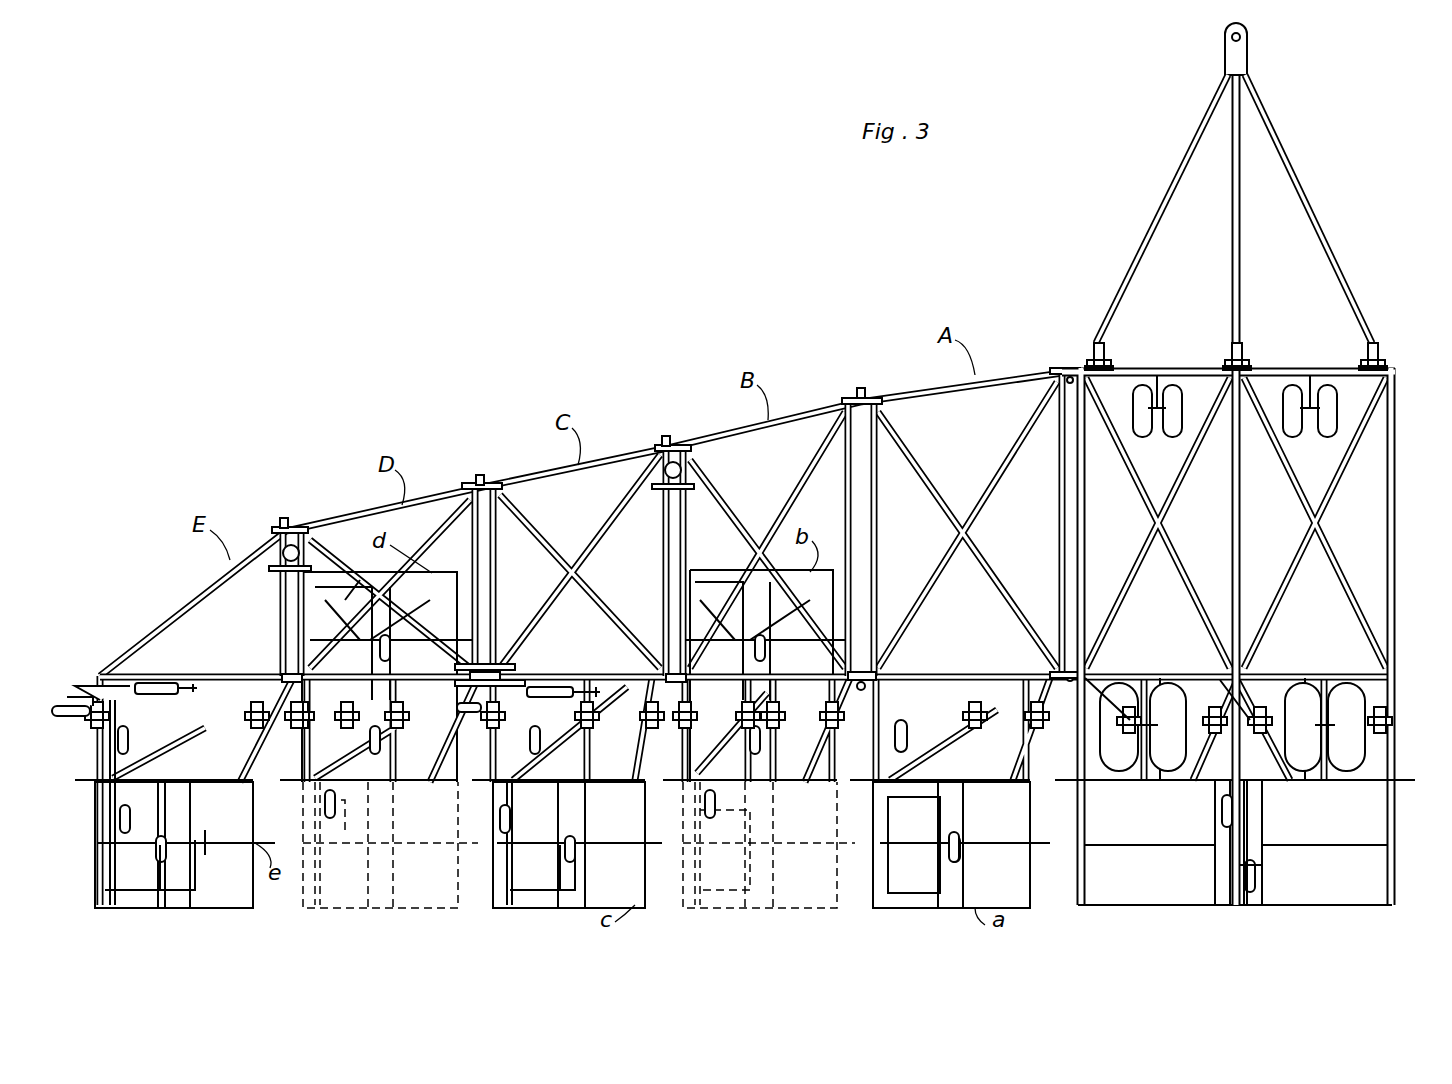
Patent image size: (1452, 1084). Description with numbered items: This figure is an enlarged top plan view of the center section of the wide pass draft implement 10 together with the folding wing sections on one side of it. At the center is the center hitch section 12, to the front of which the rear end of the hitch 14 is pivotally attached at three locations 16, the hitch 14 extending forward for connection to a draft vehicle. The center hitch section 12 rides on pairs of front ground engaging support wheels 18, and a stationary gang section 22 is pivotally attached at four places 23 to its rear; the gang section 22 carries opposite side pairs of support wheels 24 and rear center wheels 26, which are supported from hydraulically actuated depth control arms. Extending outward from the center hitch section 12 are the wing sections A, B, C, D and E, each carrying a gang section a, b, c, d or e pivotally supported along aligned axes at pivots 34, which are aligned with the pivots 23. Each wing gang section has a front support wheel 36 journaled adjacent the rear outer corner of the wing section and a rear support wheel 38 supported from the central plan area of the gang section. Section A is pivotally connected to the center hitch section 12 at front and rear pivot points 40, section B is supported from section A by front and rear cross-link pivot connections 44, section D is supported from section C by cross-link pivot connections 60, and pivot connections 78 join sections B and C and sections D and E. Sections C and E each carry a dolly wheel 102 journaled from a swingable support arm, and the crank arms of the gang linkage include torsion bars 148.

The wide pass draft implement 10 is at (1320, 205).
The center hitch section 12 is at (1190, 366).
The hitch 14 is at (1168, 173).
The pivotal attachment 16 is at (1110, 355).
The front ground engaging support wheels 18 is at (1172, 455).
The stationary gang section 22 is at (1395, 860).
The pivotal attachment 23 is at (1100, 722).
The support wheels 24 is at (1160, 798).
The rear center wheels 26 is at (1222, 815).
The pivot connections 34 is at (185, 713).
The front support wheel 36 is at (903, 752).
The rear support wheel 38 is at (958, 840).
The pivot points 40 is at (1066, 368).
The pivot connections 44 is at (860, 395).
The pivot connection 60 is at (478, 480).
The pivot connection 78 is at (675, 444).
The dolly wheel 102 is at (60, 700).
The torsion bars 148 is at (140, 892).